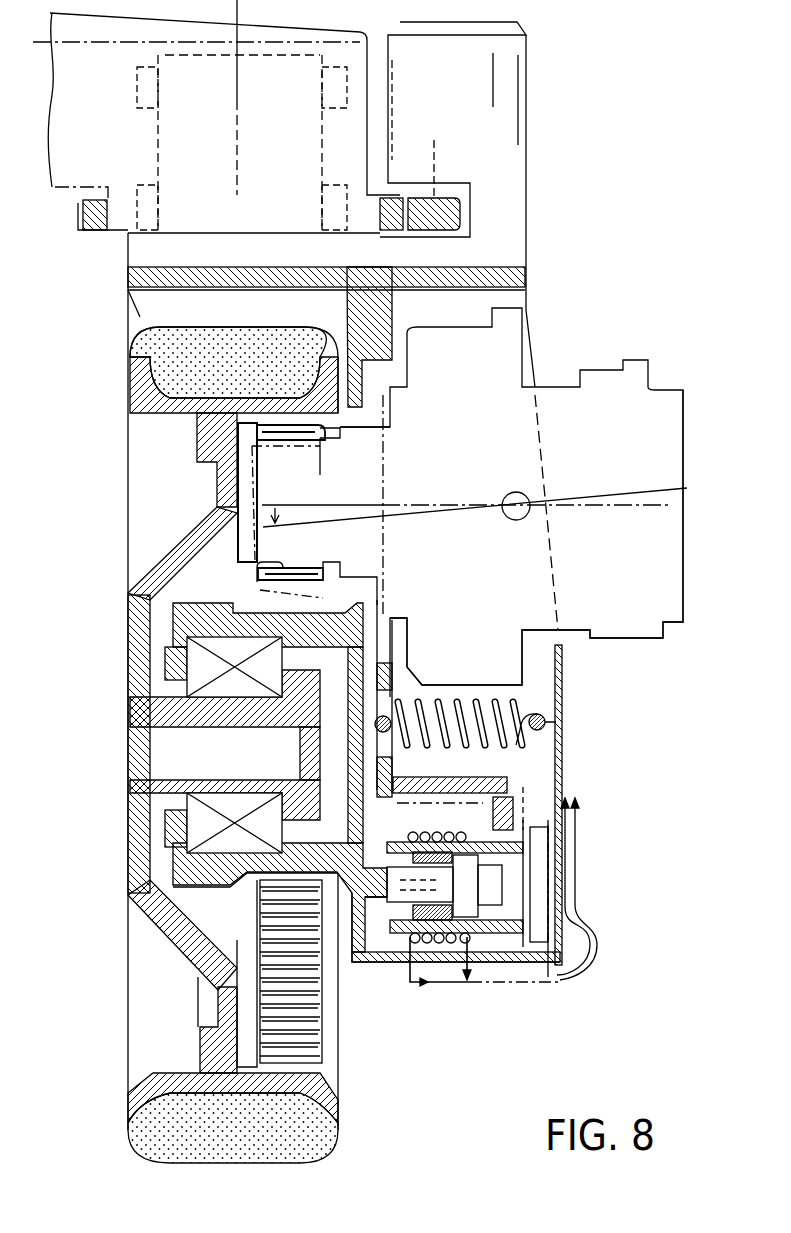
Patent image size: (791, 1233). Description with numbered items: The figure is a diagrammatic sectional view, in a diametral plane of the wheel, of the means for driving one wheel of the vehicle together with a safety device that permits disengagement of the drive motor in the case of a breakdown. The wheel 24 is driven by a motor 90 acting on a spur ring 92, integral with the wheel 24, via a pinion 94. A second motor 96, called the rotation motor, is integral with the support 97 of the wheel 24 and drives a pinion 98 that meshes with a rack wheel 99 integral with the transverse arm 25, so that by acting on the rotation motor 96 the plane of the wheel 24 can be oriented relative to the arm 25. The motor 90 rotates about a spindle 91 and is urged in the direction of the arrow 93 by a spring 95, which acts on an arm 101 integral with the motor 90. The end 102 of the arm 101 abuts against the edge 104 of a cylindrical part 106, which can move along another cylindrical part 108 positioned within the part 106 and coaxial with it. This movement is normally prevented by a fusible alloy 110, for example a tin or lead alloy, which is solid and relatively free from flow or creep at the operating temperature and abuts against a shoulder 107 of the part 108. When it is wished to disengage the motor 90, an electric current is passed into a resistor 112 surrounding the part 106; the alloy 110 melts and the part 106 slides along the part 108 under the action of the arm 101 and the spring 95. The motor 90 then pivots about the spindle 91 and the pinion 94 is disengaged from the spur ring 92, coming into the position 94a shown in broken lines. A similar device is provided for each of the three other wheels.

The wheel 24 is at (130, 397).
The transverse arm 25 is at (190, 25).
The motor 90 is at (650, 375).
The spindle 91 is at (513, 517).
The spur ring 92 is at (283, 1047).
The arrow 93 is at (283, 511).
The pinion 94 is at (260, 563).
The disengaged position of pinion 94a is at (252, 445).
The spring 95 is at (487, 700).
The rotation motor 96 is at (505, 68).
The support 97 is at (167, 288).
The fastening nut 98 is at (452, 200).
The rack wheel 99 is at (82, 220).
The arm 101 is at (477, 780).
The end of arm 102 is at (483, 830).
The edge 104 is at (543, 977).
The cylindrical part 106 is at (490, 930).
The shoulder 107 is at (463, 882).
The cylindrical part 108 is at (493, 875).
The fusible alloy 110 is at (395, 953).
The resistor 112 is at (400, 837).